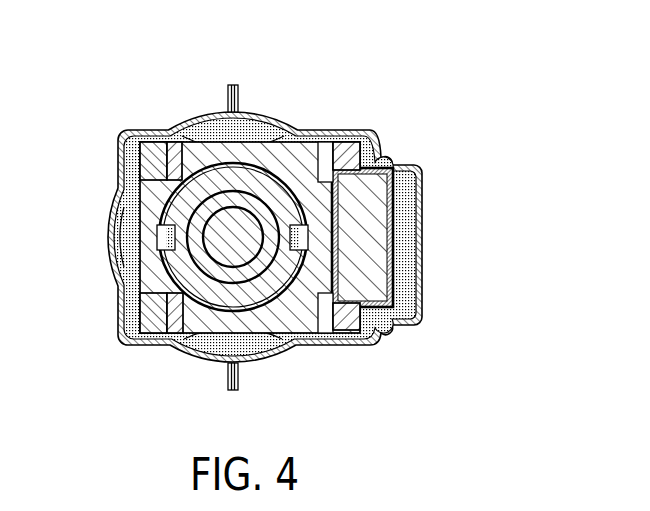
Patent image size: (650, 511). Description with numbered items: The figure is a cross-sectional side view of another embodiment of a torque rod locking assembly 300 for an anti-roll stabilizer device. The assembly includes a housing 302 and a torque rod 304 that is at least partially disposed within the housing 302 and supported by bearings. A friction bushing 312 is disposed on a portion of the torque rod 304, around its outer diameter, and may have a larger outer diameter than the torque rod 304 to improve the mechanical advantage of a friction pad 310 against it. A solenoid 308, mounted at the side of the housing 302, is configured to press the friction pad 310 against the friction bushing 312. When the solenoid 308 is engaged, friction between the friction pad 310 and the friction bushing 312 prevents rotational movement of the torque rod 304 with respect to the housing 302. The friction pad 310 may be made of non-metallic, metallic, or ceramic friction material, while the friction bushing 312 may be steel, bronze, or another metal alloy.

The torque rod locking assembly 300 is at (472, 116).
The housing 302 is at (288, 346).
The torque rod 304 is at (233, 237).
The solenoid 308 is at (357, 253).
The friction pad 310 is at (300, 180).
The friction bushing 312 is at (210, 172).